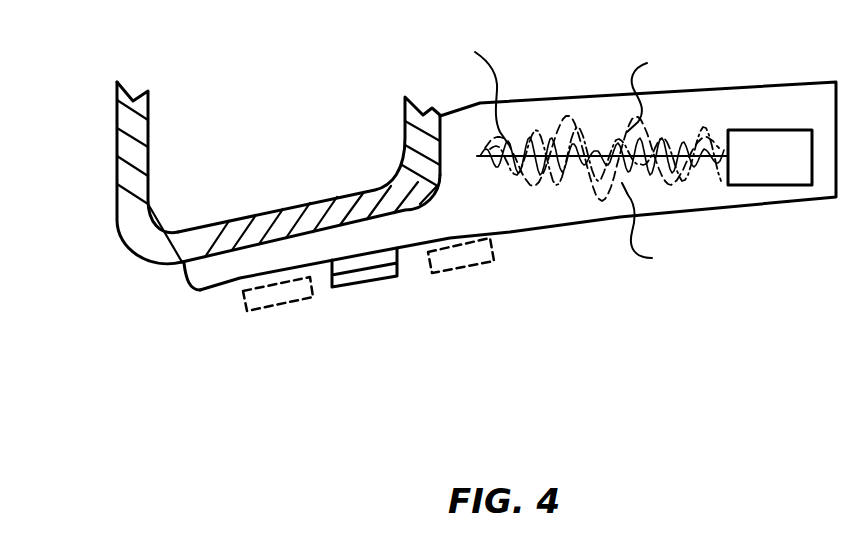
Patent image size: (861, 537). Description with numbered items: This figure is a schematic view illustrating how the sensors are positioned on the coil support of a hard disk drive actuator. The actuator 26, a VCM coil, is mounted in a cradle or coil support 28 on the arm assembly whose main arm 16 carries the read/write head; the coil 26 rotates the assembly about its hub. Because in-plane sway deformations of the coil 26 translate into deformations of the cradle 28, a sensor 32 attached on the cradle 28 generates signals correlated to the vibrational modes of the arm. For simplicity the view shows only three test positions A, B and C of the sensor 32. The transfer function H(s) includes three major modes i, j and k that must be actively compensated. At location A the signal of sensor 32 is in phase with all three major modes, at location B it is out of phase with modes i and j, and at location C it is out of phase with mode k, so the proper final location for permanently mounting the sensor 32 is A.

The main arm 16 is at (533, 113).
The actuator 26 is at (150, 128).
The coil support 28 is at (200, 278).
The sensor 32 is at (357, 279).
The test position A is at (404, 306).
The test position B is at (267, 323).
The test position C is at (526, 266).